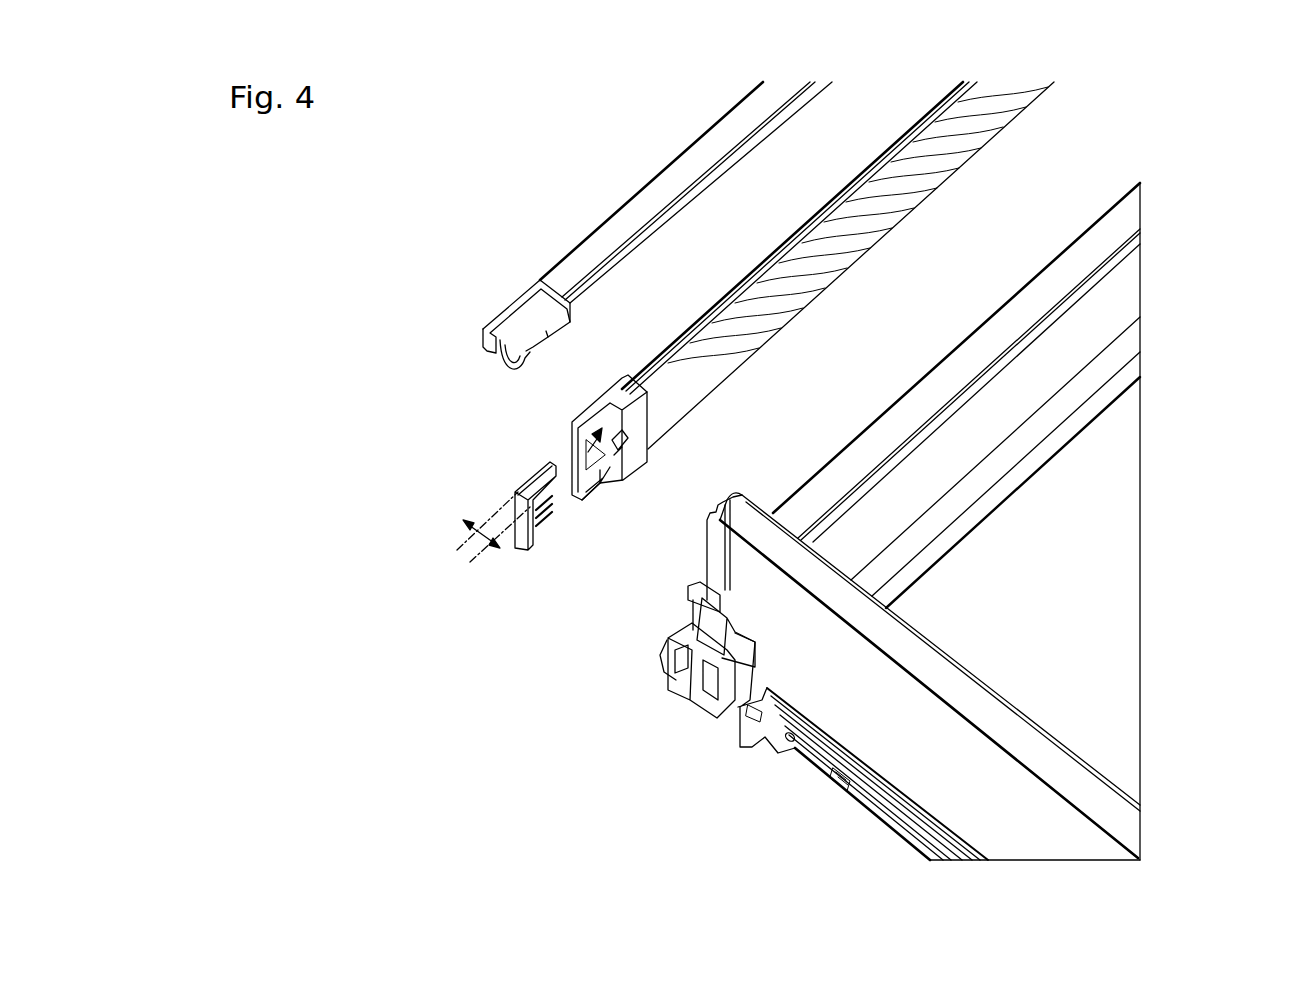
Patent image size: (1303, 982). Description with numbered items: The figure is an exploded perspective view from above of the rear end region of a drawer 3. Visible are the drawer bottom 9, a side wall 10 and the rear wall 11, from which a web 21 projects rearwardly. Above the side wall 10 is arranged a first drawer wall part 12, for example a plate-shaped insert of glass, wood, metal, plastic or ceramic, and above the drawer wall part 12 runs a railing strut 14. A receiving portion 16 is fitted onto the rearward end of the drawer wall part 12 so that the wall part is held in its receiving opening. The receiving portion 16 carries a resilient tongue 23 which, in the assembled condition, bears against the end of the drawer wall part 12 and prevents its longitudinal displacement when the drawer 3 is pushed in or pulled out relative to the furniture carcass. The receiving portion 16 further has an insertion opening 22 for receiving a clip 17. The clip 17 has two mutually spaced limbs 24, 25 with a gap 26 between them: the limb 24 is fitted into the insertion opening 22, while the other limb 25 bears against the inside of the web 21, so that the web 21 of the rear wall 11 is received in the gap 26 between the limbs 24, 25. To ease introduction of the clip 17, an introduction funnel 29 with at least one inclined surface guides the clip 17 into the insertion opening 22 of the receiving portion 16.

The drawer 3 is at (1172, 572).
The drawer bottom 9 is at (1064, 601).
The side wall 10 is at (1125, 297).
The rear wall 11 is at (908, 782).
The first drawer wall part 12 is at (970, 132).
The railing strut 14 is at (660, 198).
The receiving portion 16 is at (617, 393).
The clip 17 is at (522, 533).
The web 21 is at (717, 552).
The insertion opening 22 is at (588, 452).
The resilient tongue 23 is at (612, 443).
The limb 24 is at (540, 467).
The limb 25 is at (553, 517).
The gap 26 is at (480, 540).
The introduction funnel 29 is at (597, 483).